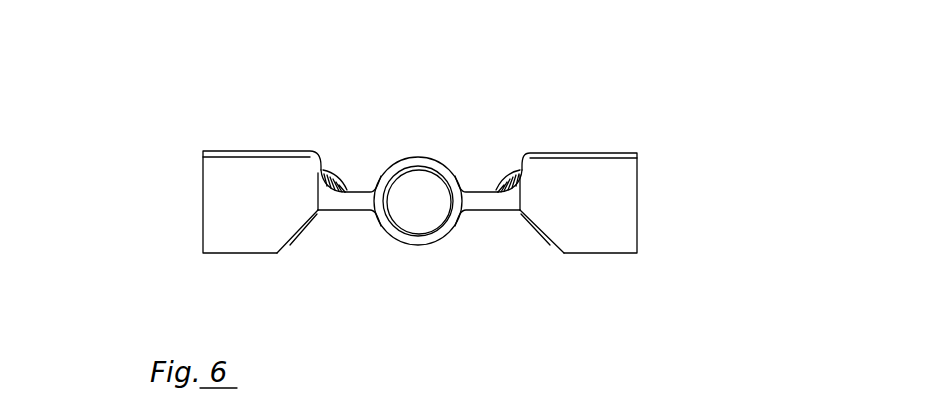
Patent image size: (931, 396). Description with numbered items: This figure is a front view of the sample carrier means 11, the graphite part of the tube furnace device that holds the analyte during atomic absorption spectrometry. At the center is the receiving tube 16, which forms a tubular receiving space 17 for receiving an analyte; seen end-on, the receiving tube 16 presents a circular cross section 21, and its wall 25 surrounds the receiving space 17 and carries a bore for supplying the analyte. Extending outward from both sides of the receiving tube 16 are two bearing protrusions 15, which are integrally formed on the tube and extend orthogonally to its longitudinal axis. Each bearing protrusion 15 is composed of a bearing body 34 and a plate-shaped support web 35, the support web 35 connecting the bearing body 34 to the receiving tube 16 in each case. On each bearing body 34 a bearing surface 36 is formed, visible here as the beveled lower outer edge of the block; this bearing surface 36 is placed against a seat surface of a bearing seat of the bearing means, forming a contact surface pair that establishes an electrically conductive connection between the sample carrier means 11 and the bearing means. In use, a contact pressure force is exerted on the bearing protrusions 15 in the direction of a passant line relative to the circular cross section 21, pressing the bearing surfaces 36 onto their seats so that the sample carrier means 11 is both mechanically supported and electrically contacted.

The sample carrier means 11 is at (437, 198).
The bearing protrusions 15 is at (415, 199).
The receiving tube 16 is at (435, 128).
The tubular receiving space 17 is at (417, 196).
The circular cross section 21 is at (436, 247).
The wall 25 is at (398, 238).
The bearing body 34 is at (227, 190).
The support web 35 is at (351, 205).
The bearing surface 36 is at (202, 255).